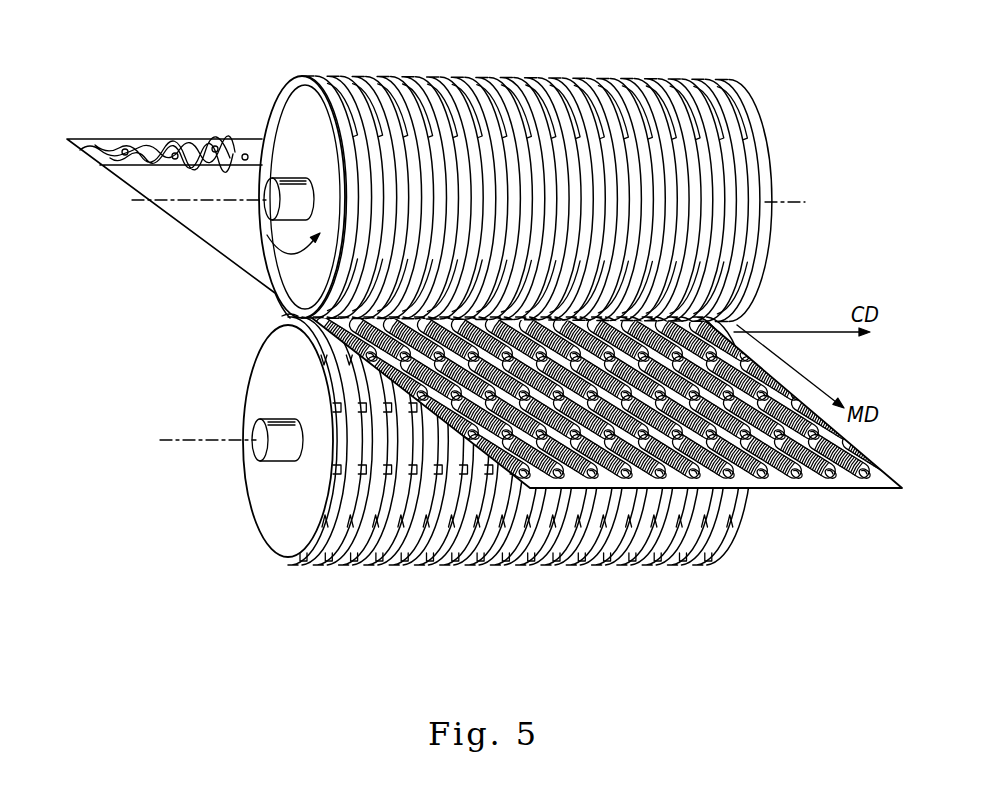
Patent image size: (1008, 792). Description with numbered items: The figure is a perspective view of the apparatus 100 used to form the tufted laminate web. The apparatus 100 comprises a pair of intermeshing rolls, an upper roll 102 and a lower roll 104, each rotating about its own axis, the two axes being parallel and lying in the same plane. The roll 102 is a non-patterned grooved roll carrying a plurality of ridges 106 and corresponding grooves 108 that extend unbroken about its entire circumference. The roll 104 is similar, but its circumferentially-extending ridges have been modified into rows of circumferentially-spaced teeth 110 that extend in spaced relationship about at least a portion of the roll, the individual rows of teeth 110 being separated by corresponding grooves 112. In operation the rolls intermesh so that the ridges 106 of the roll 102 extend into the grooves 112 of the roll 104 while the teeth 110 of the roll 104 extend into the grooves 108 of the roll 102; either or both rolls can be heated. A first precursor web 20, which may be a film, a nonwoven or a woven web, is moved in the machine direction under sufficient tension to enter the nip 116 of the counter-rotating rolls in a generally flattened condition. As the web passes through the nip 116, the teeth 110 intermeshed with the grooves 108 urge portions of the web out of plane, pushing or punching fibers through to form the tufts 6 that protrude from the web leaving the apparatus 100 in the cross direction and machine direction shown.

The tufts 6 is at (824, 443).
The first precursor web 20 is at (90, 155).
The apparatus 100 is at (492, 326).
The roll 102 is at (285, 123).
The roll 104 is at (278, 503).
The ridges 106 is at (363, 73).
The grooves 108 is at (707, 90).
The teeth 110 is at (312, 562).
The grooves 112 is at (692, 547).
The nip 116 is at (265, 317).